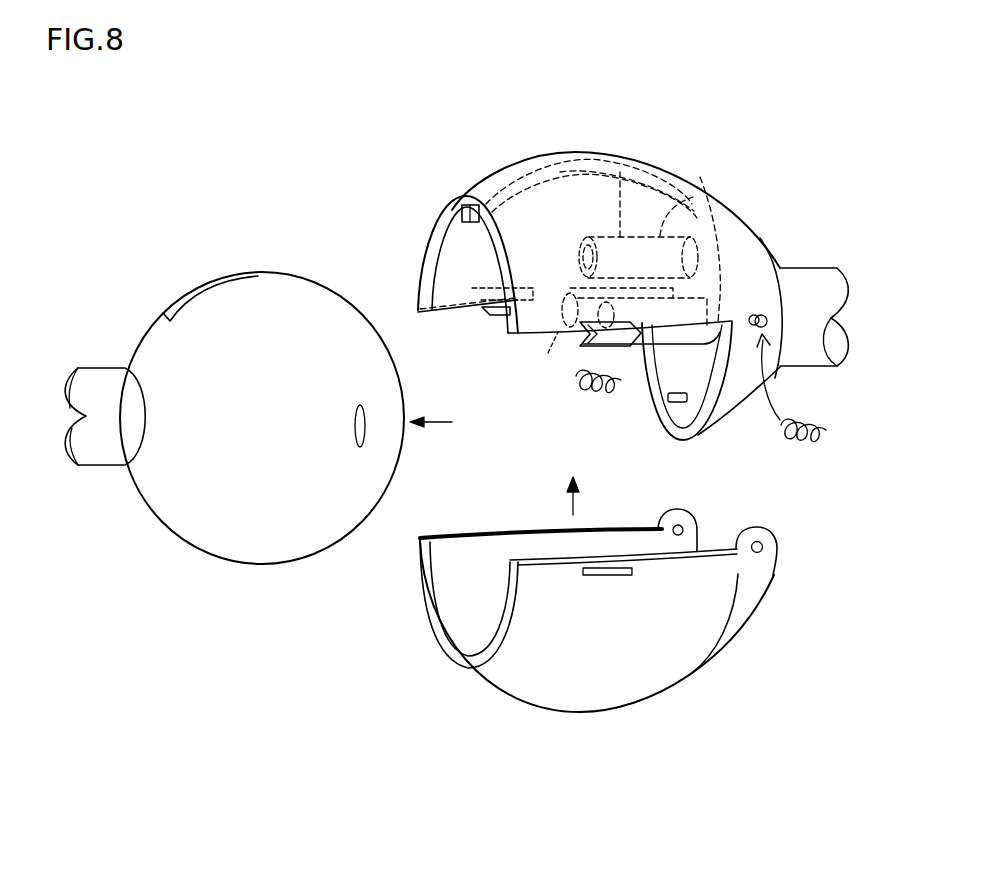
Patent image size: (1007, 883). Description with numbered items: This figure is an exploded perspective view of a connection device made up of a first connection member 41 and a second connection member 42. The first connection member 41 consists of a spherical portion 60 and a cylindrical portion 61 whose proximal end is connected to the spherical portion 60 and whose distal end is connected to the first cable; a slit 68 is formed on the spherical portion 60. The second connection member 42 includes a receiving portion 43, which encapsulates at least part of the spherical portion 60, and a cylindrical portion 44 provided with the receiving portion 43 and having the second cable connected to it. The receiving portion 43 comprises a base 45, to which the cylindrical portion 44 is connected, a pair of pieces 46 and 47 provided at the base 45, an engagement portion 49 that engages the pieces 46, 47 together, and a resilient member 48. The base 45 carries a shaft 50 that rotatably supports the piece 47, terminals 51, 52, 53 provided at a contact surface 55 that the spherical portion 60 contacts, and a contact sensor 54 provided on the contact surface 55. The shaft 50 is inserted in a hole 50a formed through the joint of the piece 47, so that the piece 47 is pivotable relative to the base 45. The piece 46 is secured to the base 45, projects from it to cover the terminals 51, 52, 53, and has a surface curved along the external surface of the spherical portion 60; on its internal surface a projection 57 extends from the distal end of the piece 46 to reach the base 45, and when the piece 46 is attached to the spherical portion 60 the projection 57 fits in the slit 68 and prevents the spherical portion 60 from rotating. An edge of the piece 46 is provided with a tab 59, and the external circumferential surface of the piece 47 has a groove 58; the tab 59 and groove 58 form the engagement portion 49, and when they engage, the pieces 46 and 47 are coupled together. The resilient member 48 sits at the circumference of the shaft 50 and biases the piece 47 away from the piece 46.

The first connection member 41 is at (268, 258).
The second connection member 42 is at (465, 121).
The receiving portion 43 is at (550, 139).
The cylindrical portion 44 is at (803, 283).
The base 45 is at (745, 245).
The piece 46 is at (575, 152).
The piece 47 is at (626, 629).
The resilient member 48 is at (585, 395).
The engagement portion 49 is at (620, 348).
The shaft 50 is at (762, 314).
The hole 50a is at (778, 570).
The terminal 51 is at (705, 205).
The terminal 52 is at (621, 335).
The terminal 53 is at (629, 175).
The contact sensor 54 is at (680, 403).
The contact surface 55 is at (698, 380).
The projection 57 is at (461, 213).
The groove 58 is at (612, 576).
The tab 59 is at (495, 318).
The spherical portion 60 is at (256, 548).
The cylindrical portion 61 is at (97, 447).
The slit 68 is at (185, 297).